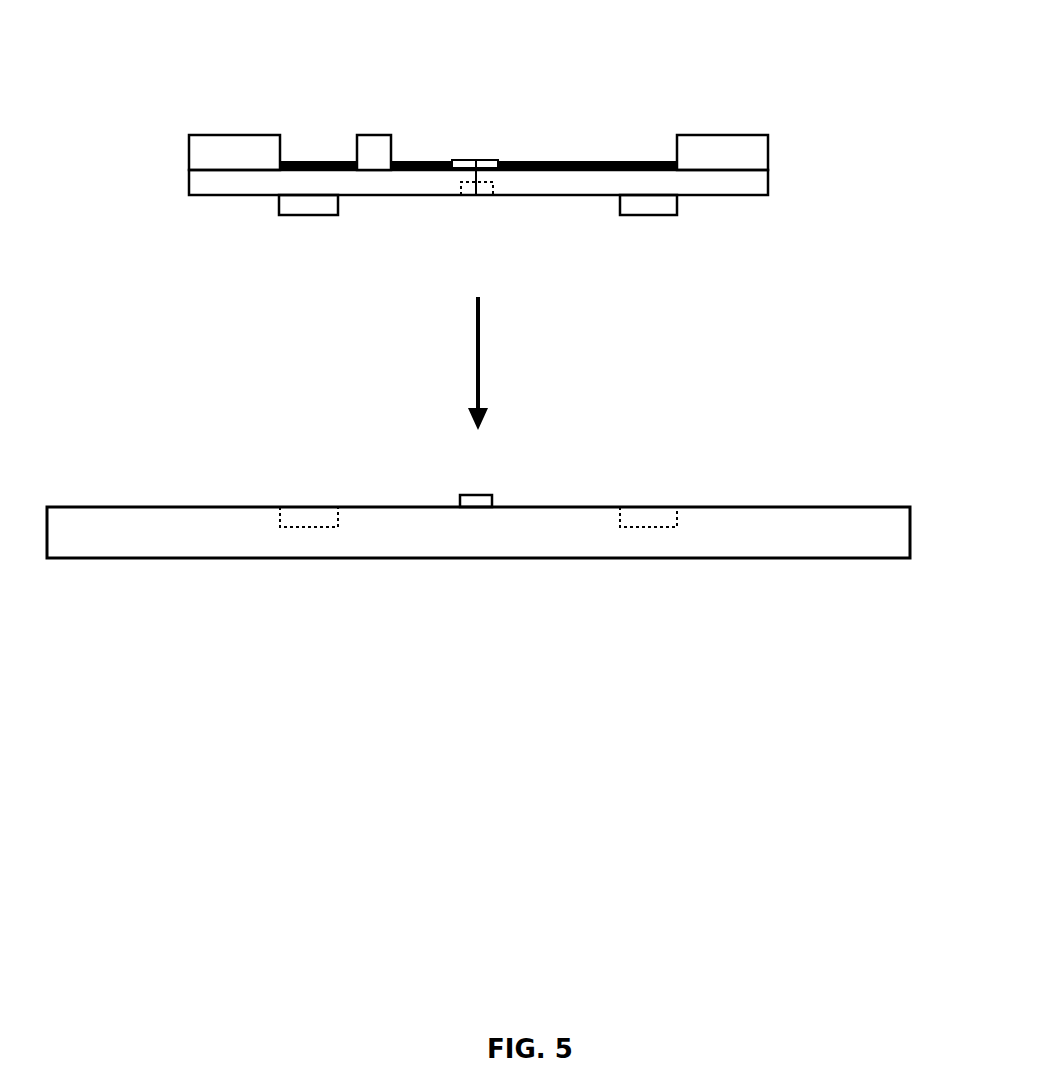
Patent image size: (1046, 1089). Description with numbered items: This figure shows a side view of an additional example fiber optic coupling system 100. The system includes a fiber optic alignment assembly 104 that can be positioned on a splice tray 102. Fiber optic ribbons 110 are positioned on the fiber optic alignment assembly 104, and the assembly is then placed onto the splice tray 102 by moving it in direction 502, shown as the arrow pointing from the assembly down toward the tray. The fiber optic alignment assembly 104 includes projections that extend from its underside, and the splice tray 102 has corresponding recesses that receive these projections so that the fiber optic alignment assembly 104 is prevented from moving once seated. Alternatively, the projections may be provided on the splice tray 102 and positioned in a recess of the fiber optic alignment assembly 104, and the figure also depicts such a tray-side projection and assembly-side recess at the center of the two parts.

The fiber optic coupling system 100 is at (106, 48).
The splice tray 102 is at (480, 560).
The fiber optic alignment assembly 104 is at (768, 181).
The fiber optic ribbons 110 is at (322, 160).
The direction 502 is at (480, 357).